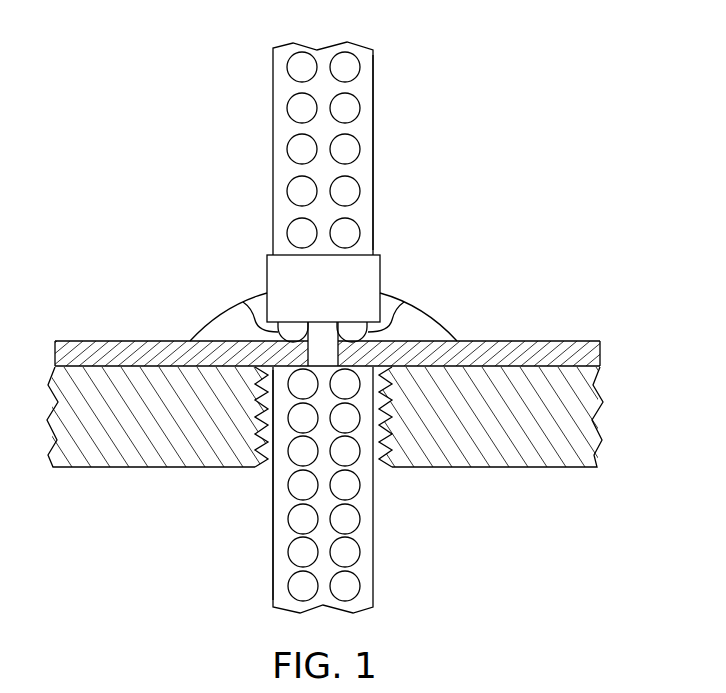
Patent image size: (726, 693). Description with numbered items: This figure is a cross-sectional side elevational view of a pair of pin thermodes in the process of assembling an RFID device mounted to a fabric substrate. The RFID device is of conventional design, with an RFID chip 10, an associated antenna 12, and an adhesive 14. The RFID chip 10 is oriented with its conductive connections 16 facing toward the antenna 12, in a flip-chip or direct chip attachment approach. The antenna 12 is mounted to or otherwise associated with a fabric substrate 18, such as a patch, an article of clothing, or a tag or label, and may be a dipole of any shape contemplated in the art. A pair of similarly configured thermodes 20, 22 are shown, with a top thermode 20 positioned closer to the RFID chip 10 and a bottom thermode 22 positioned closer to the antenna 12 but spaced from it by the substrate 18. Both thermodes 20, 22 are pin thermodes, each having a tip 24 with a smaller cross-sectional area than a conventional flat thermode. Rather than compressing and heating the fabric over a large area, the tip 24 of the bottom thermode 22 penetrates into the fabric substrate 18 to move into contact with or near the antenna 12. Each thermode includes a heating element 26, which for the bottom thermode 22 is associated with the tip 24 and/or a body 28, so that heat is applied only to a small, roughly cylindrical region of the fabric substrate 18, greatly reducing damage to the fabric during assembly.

The RFID chip 10 is at (381, 271).
The antenna 12 is at (75, 340).
The adhesive 14 is at (196, 336).
The conductive connections 16 is at (243, 304).
The fabric substrate 18 is at (108, 465).
The top thermode 20 is at (271, 80).
The bottom thermode 22 is at (377, 554).
The tip 24 is at (388, 394).
The heating element 26 is at (358, 150).
The body 28 is at (374, 84).